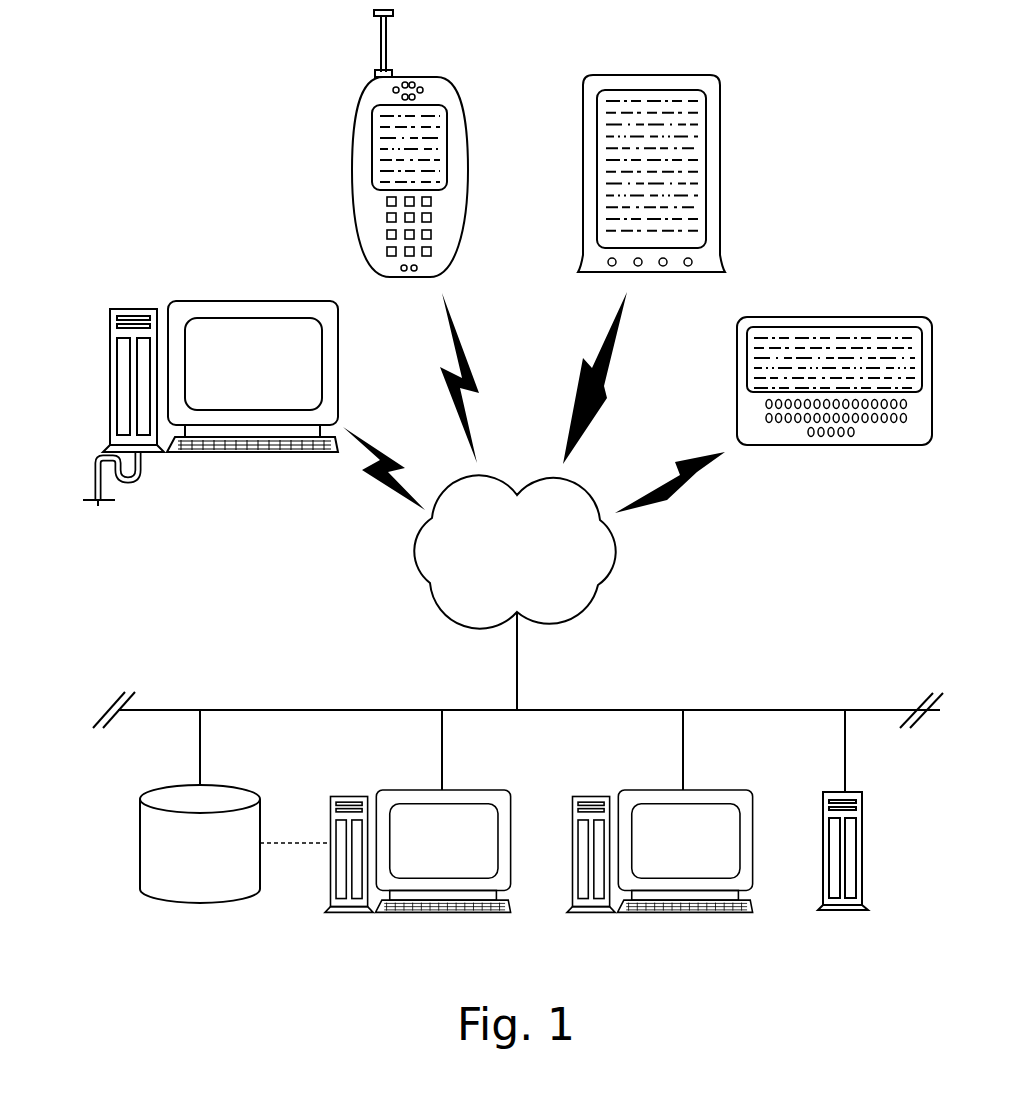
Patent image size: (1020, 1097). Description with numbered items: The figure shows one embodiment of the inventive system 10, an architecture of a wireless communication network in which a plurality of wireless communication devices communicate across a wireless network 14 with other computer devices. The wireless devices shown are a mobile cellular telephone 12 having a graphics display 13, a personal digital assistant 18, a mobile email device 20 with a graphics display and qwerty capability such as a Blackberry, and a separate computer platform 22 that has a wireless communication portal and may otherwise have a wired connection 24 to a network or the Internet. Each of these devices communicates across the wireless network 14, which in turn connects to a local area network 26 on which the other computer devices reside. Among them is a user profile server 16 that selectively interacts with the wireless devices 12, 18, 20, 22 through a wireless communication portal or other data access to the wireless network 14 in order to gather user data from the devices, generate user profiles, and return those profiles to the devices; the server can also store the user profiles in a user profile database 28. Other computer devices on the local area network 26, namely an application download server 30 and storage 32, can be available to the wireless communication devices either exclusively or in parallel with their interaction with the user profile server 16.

The system 10 is at (836, 158).
The mobile cellular telephone 12 is at (448, 78).
The graphics display 13 is at (447, 143).
The wireless network 14 is at (618, 551).
The user profile server 16 is at (418, 790).
The personal digital assistant 18 is at (653, 75).
The mobile email device 20 is at (866, 445).
The computer platform 22 is at (245, 301).
The wired connection 24 is at (150, 494).
The local area network 26 is at (730, 710).
The user profile database 28 is at (140, 845).
The application download server 30 is at (668, 790).
The storage 32 is at (862, 827).